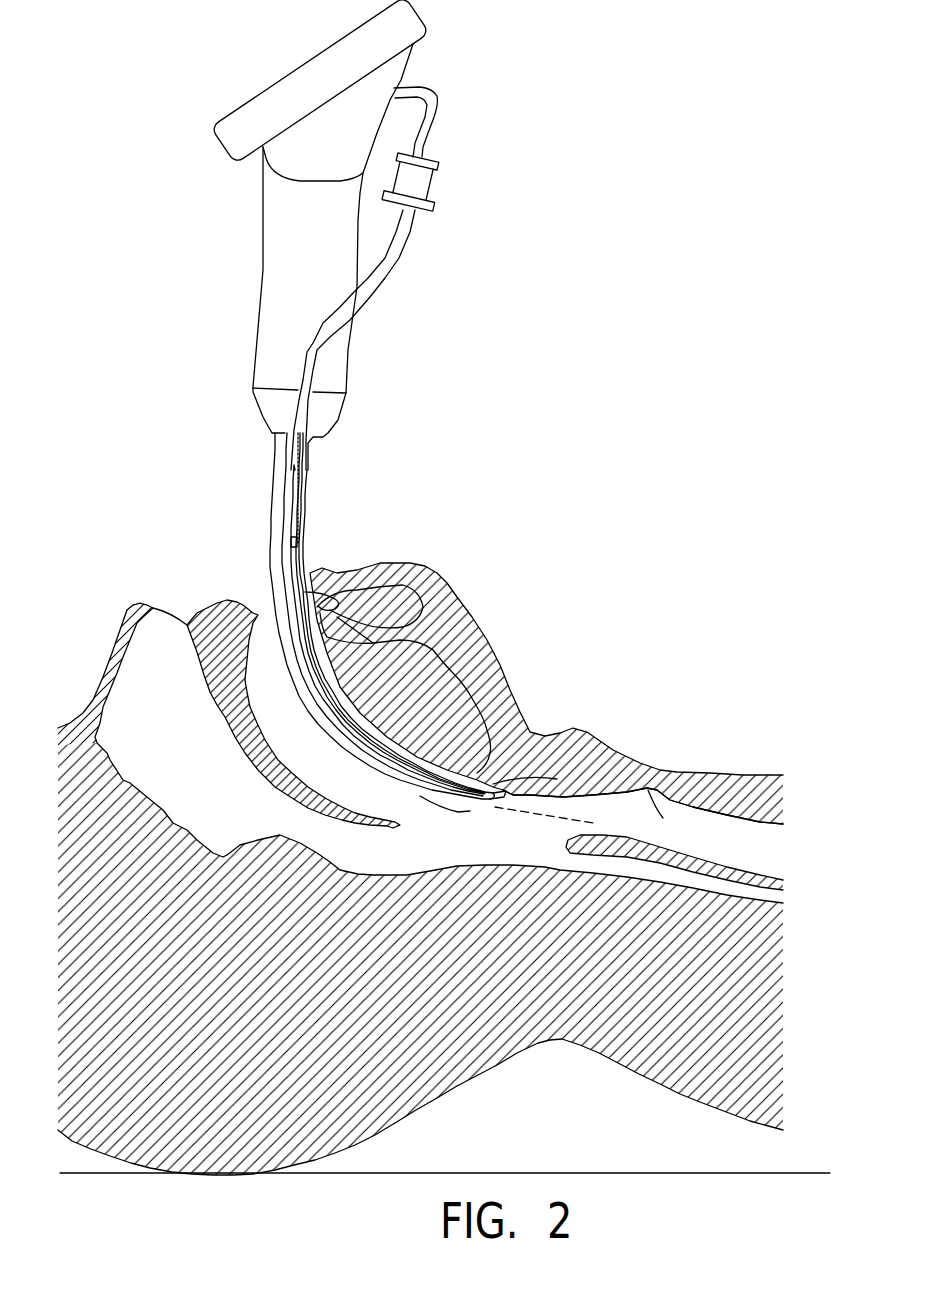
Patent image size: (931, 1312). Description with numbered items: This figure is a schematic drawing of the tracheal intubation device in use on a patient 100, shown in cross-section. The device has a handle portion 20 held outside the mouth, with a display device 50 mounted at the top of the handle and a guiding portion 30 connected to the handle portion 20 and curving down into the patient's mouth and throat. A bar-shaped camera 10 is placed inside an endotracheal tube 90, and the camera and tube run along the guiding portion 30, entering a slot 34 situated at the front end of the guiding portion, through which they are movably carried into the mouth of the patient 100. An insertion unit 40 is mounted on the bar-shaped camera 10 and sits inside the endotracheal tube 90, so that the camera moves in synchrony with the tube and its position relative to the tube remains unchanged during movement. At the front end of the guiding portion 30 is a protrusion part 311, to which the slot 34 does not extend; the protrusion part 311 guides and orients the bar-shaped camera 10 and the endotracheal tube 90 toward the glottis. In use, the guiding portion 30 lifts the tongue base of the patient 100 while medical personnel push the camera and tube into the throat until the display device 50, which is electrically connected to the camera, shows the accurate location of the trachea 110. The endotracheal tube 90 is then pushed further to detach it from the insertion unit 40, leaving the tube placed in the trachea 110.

The bar-shaped camera 10 is at (439, 106).
The handle portion 20 is at (283, 233).
The guiding portion 30 is at (280, 515).
The slot 34 is at (437, 810).
The insertion unit 40 is at (437, 165).
The display device 50 is at (302, 58).
The endotracheal tube 90 is at (366, 299).
The patient 100 is at (490, 692).
The trachea 110 is at (673, 772).
The protrusion part 311 is at (507, 797).